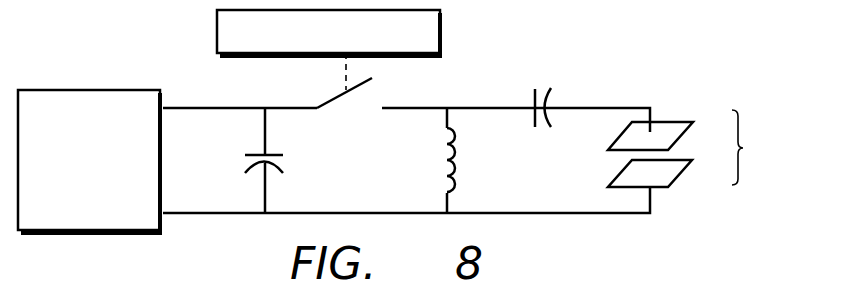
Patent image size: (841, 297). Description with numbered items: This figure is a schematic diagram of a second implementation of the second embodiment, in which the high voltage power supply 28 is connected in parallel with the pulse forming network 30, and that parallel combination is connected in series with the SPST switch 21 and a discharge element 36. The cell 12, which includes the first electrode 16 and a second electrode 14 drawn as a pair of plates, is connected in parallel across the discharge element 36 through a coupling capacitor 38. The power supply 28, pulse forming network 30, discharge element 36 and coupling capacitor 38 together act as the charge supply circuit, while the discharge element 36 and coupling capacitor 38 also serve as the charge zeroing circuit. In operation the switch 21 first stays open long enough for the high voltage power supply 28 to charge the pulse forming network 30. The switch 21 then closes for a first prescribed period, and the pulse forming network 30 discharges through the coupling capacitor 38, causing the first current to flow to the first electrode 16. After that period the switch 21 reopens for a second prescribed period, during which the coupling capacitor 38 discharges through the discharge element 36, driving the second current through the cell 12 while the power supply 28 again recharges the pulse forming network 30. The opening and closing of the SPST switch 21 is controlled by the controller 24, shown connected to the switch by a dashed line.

The cell 12 is at (752, 147).
The lower electrode plate 14 is at (672, 173).
The first electrode 16 is at (668, 127).
The SPST switch 21 is at (332, 96).
The controller 24 is at (443, 35).
The high voltage power supply 28 is at (89, 161).
The pulse forming network 30 is at (283, 163).
The discharge element 36 is at (450, 177).
The coupling capacitor 38 is at (545, 92).